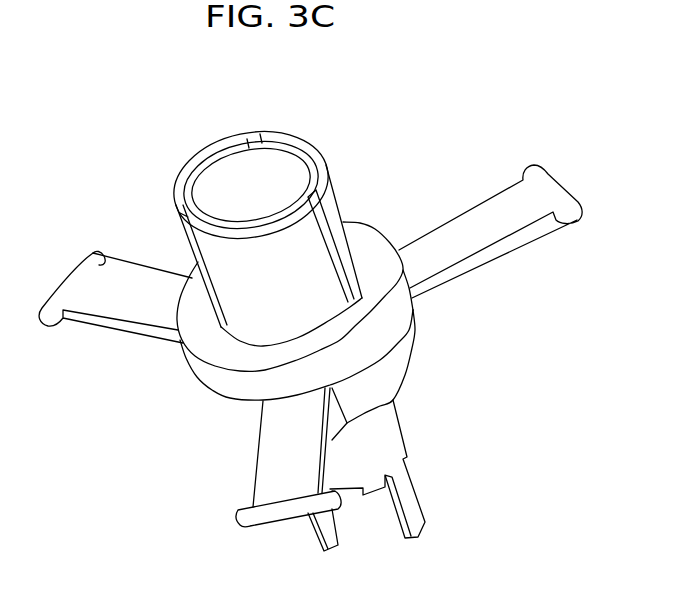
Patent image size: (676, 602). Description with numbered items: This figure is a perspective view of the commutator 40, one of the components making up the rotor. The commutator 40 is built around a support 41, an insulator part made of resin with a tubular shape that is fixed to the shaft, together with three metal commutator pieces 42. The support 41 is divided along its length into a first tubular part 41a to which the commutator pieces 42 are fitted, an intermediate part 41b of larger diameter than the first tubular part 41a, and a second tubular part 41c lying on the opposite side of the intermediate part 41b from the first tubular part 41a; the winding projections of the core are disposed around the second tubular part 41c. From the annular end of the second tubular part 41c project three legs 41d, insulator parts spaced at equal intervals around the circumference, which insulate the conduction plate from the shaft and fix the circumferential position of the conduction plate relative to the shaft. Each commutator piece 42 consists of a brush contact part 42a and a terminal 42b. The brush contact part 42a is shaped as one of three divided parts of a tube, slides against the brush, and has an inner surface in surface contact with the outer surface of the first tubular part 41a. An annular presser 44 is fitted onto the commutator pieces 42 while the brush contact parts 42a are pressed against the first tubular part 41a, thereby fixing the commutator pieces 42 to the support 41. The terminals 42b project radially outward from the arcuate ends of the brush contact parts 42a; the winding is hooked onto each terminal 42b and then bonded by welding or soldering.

The commutator 40 is at (185, 138).
The support 41 is at (423, 455).
The first tubular part 41a is at (310, 144).
The intermediate part 41b is at (403, 357).
The second tubular part 41c is at (388, 433).
The legs 41d is at (423, 517).
The commutator pieces 42 is at (163, 232).
The brush contact part 42a is at (232, 283).
The terminal 42b is at (262, 477).
The annular presser 44 is at (375, 235).